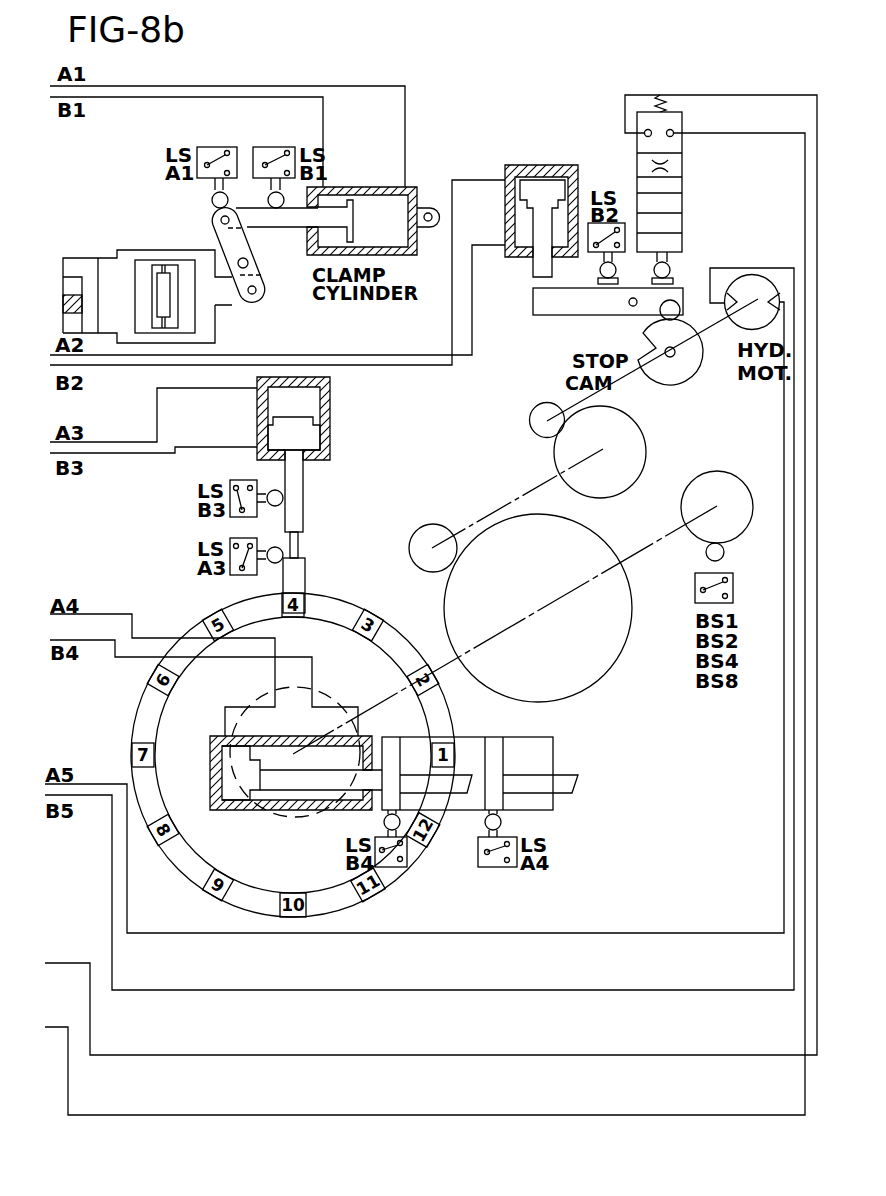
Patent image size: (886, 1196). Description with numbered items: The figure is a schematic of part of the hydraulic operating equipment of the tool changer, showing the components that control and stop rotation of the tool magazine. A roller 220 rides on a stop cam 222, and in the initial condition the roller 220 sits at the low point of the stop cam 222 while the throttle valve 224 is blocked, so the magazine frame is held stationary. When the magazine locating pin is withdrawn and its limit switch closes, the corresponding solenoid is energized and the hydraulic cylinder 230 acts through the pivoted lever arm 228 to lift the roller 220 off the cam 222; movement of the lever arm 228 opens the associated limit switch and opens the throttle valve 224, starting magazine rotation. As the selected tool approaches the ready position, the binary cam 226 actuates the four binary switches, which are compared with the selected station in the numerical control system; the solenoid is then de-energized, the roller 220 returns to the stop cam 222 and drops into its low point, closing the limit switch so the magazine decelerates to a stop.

The roller 220 is at (665, 306).
The stop cam 222 is at (670, 370).
The throttle valve 224 is at (682, 176).
The binary cam 226 is at (727, 495).
The pivoted lever arm 228 is at (563, 298).
The hydraulic cylinder 230 is at (546, 170).